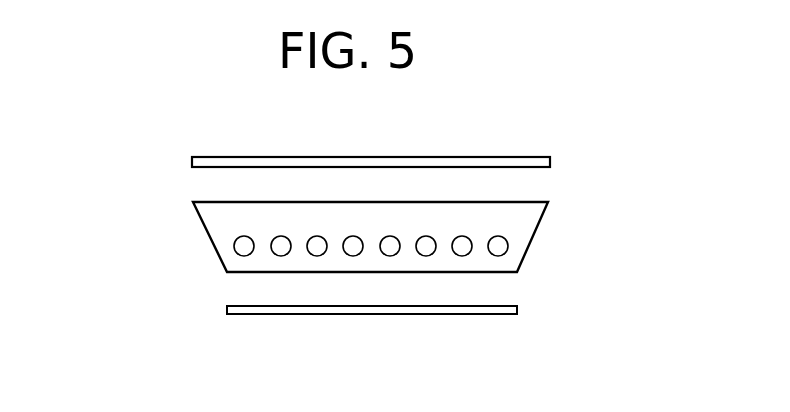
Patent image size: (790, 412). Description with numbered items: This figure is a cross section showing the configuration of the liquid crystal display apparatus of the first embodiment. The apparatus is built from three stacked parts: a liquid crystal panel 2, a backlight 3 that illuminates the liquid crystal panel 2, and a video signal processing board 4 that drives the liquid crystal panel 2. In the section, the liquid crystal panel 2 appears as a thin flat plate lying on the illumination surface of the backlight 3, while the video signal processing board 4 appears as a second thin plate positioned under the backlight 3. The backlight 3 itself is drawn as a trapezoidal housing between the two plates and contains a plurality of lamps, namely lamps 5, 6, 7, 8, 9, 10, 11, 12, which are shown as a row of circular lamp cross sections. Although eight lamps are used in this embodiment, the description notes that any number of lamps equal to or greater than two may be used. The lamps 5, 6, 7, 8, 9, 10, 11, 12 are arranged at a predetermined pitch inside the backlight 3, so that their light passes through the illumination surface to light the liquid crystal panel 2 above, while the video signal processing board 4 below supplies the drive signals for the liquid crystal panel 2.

The liquid crystal panel 2 is at (408, 156).
The backlight 3 is at (198, 266).
The video signal processing board 4 is at (463, 314).
The lamp 5 is at (234, 247).
The lamp 6 is at (273, 236).
The lamp 7 is at (313, 236).
The lamp 8 is at (350, 236).
The lamp 9 is at (392, 236).
The lamp 10 is at (430, 236).
The lamp 11 is at (467, 236).
The lamp 12 is at (508, 245).